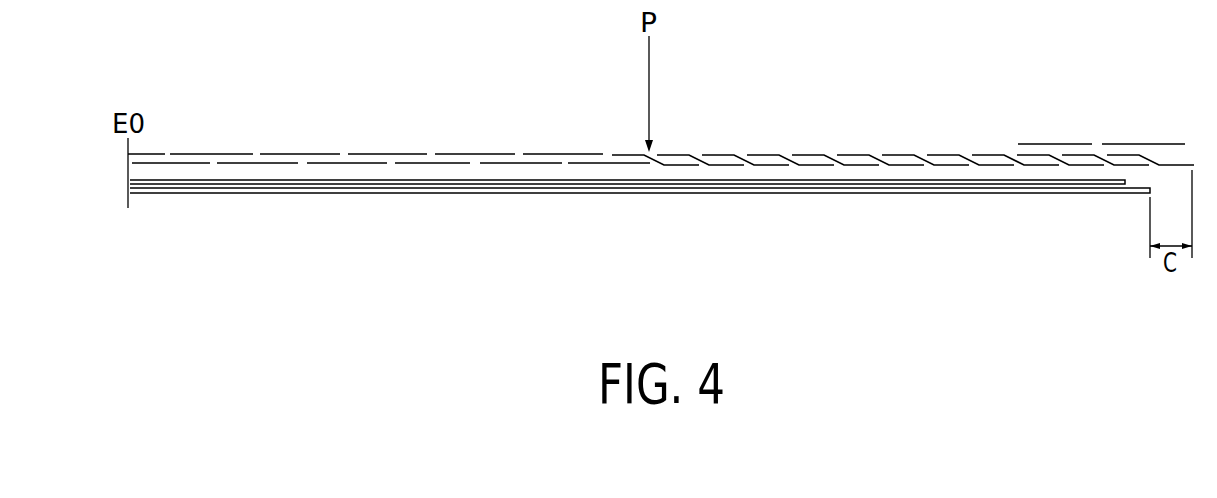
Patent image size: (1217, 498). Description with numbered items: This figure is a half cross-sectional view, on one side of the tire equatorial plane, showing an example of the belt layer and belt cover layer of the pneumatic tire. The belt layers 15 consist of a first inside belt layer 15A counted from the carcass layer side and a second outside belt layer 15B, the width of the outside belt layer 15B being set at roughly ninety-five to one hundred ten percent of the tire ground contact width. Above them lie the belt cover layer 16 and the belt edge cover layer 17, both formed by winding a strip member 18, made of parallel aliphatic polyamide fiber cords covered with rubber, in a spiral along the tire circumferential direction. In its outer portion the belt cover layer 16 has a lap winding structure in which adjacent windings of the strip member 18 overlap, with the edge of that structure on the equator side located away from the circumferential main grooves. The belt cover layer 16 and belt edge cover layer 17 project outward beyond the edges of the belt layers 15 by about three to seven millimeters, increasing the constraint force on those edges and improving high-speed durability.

The belt layers 15 is at (640, 232).
The inside belt layer 15A is at (383, 192).
The outside belt layer 15B is at (450, 182).
The belt cover layer 16 is at (476, 152).
The belt edge cover layer 17 is at (1153, 144).
The strip member 18 is at (622, 153).